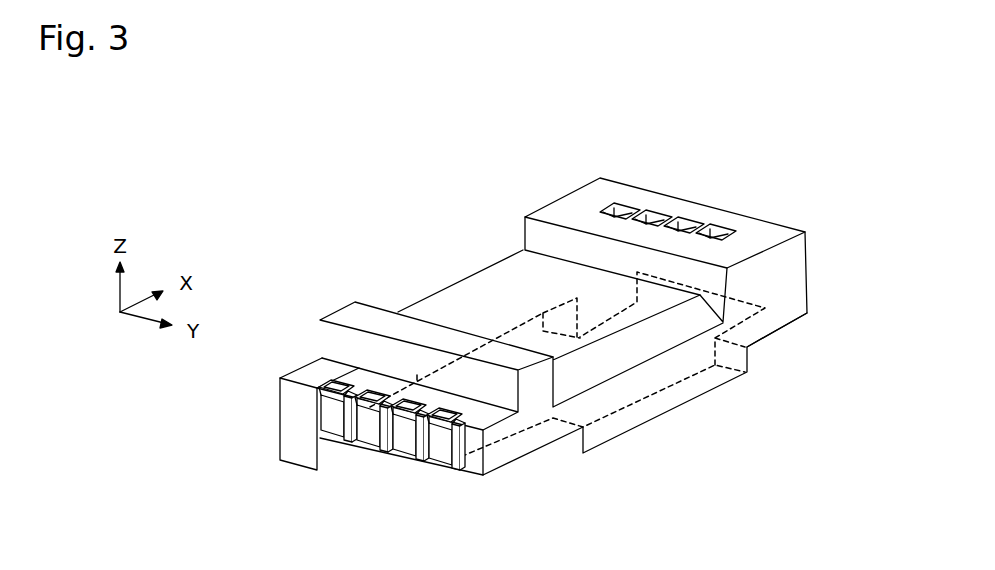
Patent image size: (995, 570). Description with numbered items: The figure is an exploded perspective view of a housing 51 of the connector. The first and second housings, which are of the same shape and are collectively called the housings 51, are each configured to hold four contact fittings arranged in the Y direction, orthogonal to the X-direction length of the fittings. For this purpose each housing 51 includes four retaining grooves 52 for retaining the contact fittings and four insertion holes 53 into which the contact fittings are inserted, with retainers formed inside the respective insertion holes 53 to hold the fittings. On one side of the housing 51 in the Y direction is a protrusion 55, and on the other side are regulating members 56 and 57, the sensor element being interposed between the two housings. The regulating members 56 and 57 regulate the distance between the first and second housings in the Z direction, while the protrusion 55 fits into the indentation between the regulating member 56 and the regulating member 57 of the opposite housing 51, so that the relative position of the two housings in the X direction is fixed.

The housing 51 is at (792, 268).
The retaining grooves 52 is at (413, 407).
The insertion holes 53 is at (720, 238).
The protrusion 55 is at (700, 382).
The regulating member 56 is at (300, 449).
The regulating member 57 is at (597, 305).